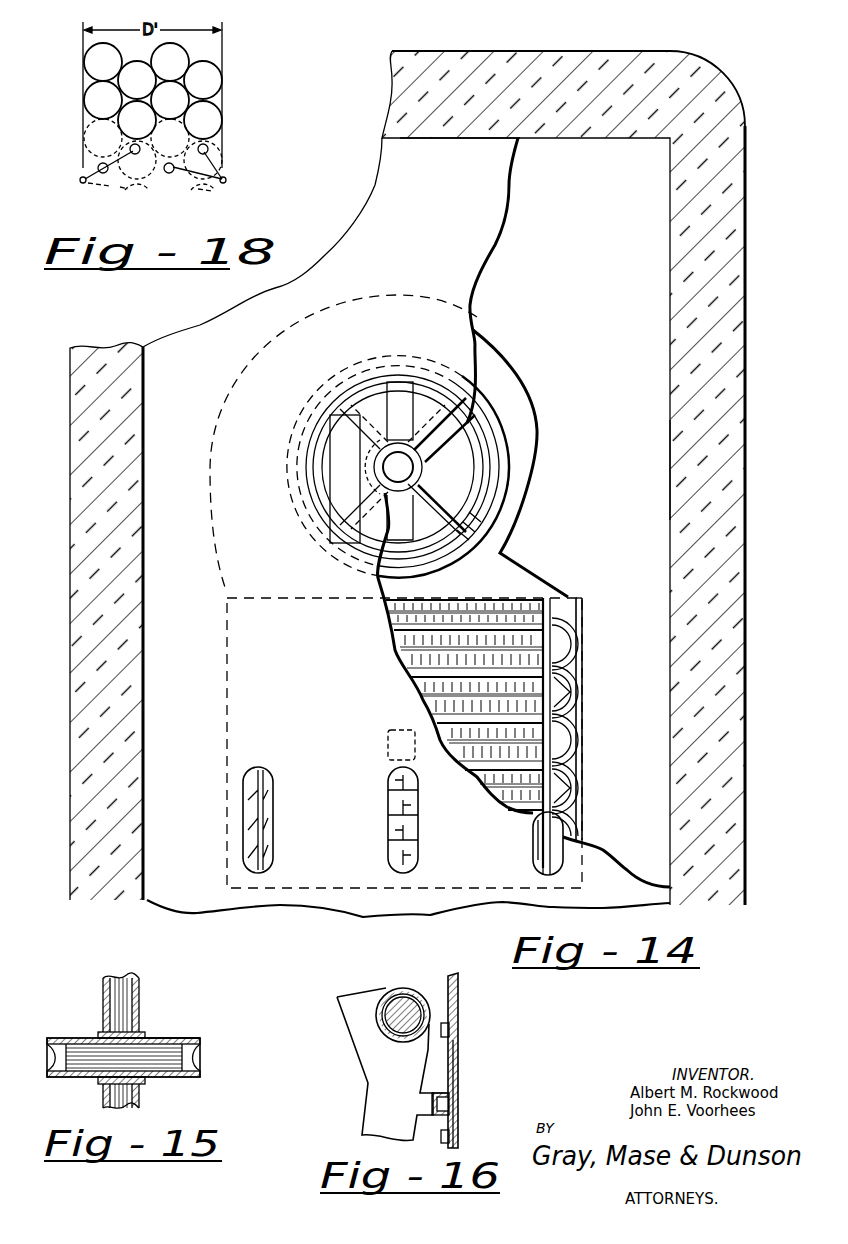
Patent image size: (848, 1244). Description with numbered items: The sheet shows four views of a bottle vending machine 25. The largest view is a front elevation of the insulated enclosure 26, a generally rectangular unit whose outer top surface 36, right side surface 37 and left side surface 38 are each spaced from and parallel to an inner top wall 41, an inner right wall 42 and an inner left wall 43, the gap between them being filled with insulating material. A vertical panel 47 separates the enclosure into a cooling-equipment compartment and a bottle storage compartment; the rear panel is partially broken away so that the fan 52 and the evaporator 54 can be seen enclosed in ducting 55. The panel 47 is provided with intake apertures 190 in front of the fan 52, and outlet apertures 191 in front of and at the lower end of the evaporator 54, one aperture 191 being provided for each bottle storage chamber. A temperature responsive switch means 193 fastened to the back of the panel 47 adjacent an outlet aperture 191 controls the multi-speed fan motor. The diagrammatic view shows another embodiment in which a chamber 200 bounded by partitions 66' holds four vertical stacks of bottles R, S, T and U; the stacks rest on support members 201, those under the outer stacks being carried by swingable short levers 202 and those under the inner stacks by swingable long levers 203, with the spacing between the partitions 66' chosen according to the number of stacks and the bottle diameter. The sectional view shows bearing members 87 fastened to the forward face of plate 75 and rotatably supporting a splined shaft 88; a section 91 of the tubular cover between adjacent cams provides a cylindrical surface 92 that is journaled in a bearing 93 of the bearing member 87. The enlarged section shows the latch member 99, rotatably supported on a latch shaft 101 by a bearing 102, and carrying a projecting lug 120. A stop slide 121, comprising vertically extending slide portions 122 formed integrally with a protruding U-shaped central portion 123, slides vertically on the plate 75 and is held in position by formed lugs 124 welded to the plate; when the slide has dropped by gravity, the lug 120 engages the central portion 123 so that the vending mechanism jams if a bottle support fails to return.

In FIG. 18, the chamber 200 is at (200, 53).
In FIG. 18, the partitions 66' is at (153, 116).
In FIG. 18, the support members 201 is at (130, 150).
In FIG. 18, the short levers 202 is at (218, 167).
In FIG. 18, the long levers 203 is at (214, 179).
In FIG. 14, the vending machine 25 is at (593, 50).
In FIG. 14, the enclosure 26 is at (749, 189).
In FIG. 14, the top surface 36 is at (434, 51).
In FIG. 14, the right side surface 37 is at (745, 422).
In FIG. 14, the left side surface 38 is at (70, 427).
In FIG. 14, the inner top wall 41 is at (463, 140).
In FIG. 14, the inner right wall 42 is at (670, 465).
In FIG. 14, the inner left wall 43 is at (145, 418).
In FIG. 14, the vertical panel 47 is at (510, 182).
In FIG. 14, the fan 52 is at (430, 446).
In FIG. 14, the evaporator 54 is at (461, 620).
In FIG. 14, the ducting 55 is at (533, 573).
In FIG. 14, the intake apertures 190 is at (437, 384).
In FIG. 14, the outlet apertures 191 is at (388, 784).
In FIG. 14, the temperature responsive switch means 193 is at (387, 735).
In FIG. 15, the bearing members 87 is at (141, 988).
In FIG. 15, the splined shaft 88 is at (198, 1068).
In FIG. 15, the section of tubular cover 91 is at (158, 1040).
In FIG. 15, the cylindrical surface 92 is at (155, 1080).
In FIG. 15, the bearing 93 is at (100, 1032).
In FIG. 16, the plate 75 is at (460, 1000).
In FIG. 16, the latch member 99 is at (360, 1053).
In FIG. 16, the latch shaft 101 is at (402, 1000).
In FIG. 16, the bearing 102 is at (385, 999).
In FIG. 16, the projecting lug 120 is at (430, 1104).
In FIG. 16, the stop slide 121 is at (452, 1112).
In FIG. 16, the slide portions 122 is at (457, 1058).
In FIG. 16, the central portion 123 is at (437, 1096).
In FIG. 16, the formed lugs 124 is at (444, 1022).